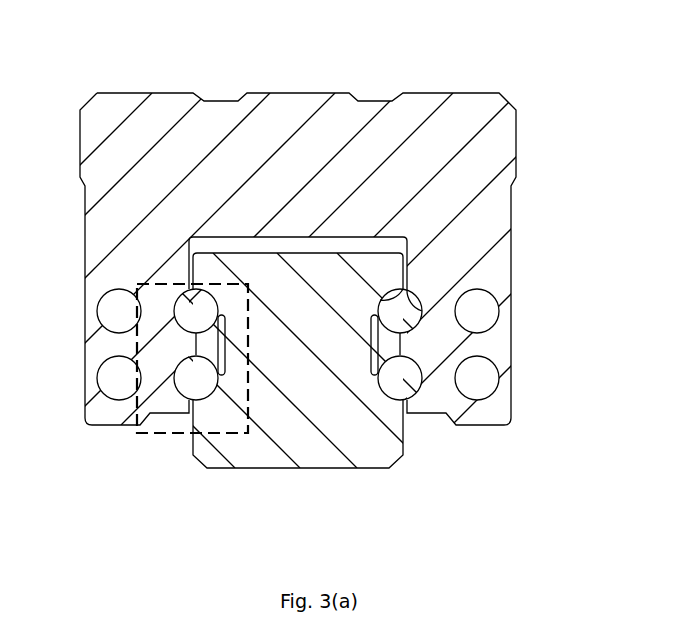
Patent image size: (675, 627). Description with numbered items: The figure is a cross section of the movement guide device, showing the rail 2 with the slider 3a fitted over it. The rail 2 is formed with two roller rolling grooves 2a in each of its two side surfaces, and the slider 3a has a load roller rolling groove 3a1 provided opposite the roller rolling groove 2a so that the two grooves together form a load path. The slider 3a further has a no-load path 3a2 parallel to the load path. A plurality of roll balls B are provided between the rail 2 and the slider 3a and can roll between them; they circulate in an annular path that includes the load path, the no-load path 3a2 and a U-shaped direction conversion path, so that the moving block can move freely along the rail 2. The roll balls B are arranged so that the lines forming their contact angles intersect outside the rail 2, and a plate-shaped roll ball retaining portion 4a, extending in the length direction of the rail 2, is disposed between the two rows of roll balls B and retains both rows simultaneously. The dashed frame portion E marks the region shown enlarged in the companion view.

The rail 2 is at (384, 418).
The roller rolling groove 2a is at (386, 272).
The slider 3a is at (110, 206).
The load roller rolling groove 3a1 is at (429, 288).
The no-load path 3a2 is at (496, 309).
The roll ball retaining portion 4a is at (366, 345).
The frame portion E is at (125, 345).
The roll balls B is at (99, 421).